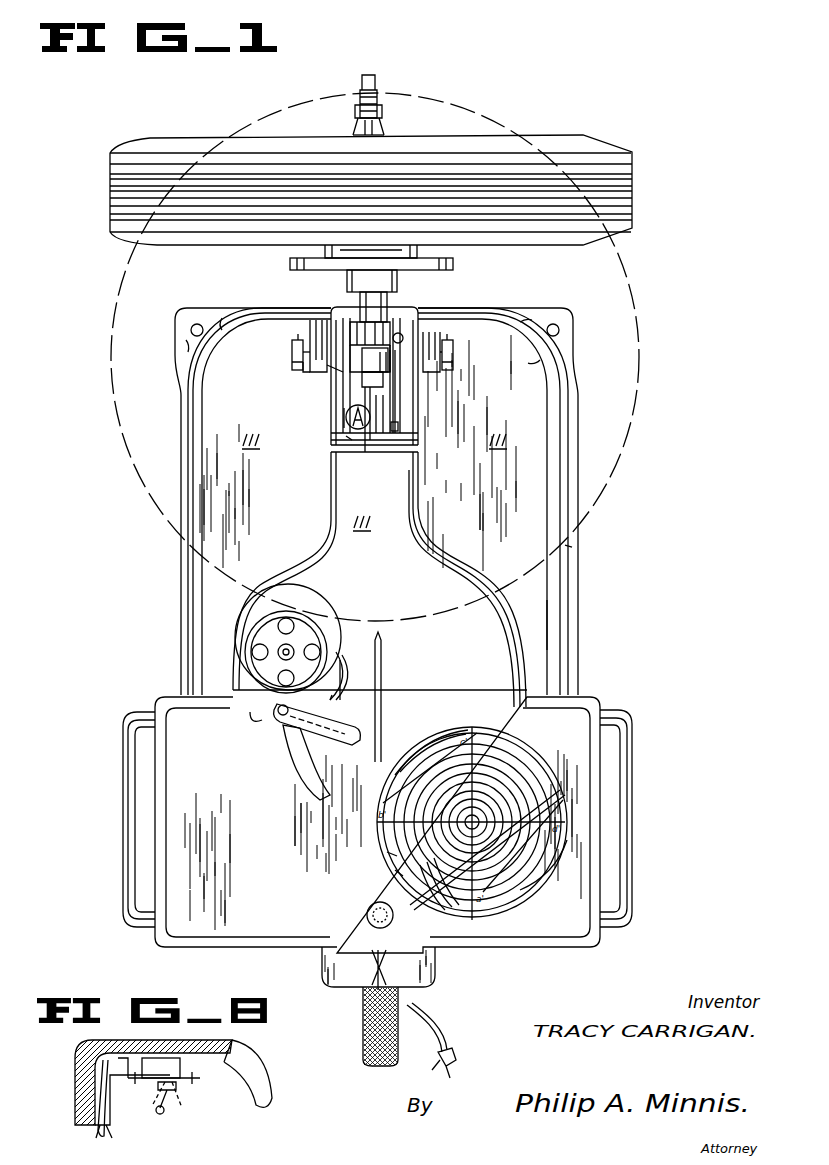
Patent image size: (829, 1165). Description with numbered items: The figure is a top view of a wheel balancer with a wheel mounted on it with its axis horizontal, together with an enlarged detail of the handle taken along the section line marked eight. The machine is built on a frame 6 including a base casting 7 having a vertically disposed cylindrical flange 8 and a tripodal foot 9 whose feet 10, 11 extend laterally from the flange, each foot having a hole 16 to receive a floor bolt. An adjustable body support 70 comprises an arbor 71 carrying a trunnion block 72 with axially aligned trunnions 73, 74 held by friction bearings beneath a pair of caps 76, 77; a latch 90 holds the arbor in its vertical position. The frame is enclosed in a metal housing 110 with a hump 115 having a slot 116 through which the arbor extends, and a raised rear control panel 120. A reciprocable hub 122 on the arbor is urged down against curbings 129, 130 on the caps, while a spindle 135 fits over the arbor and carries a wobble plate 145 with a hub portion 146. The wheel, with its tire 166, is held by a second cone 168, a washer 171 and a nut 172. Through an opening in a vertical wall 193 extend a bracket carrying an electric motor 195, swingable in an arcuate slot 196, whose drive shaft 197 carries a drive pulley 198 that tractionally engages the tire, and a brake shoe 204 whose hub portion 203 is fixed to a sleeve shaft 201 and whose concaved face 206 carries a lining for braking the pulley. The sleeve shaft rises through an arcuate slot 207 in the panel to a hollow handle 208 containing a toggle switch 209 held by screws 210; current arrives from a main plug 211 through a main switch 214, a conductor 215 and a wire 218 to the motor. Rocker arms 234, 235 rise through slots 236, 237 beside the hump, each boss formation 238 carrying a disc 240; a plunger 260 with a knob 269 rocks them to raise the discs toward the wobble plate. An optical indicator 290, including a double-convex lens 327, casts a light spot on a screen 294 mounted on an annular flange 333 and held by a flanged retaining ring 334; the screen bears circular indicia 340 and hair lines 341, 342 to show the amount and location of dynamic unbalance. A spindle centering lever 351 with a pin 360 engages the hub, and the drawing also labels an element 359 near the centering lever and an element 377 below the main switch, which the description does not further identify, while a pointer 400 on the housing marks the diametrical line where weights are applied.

In FIG. 1, the frame 6 is at (563, 627).
In FIG. 1, the base casting 7 is at (528, 318).
In FIG. 1, the cylindrical flange 8 is at (368, 746).
In FIG. 1, the tripodal foot 9 is at (225, 322).
In FIG. 1, the foot 10 is at (562, 350).
In FIG. 1, the foot 11 is at (186, 342).
In FIG. 1, the hole 16 is at (200, 326).
In FIG. 1, the adjustable body support 70 is at (390, 361).
In FIG. 1, the arbor 71 is at (324, 337).
In FIG. 1, the trunnion block 72 is at (382, 366).
In FIG. 1, the trunnion 73 is at (384, 419).
In FIG. 1, the trunnion 74 is at (338, 371).
In FIG. 1, the cap 76 is at (403, 337).
In FIG. 1, the cap 77 is at (350, 379).
In FIG. 1, the latch 90 is at (366, 451).
In FIG. 1, the metal housing 110 is at (580, 553).
In FIG. 1, the hump 115 is at (343, 419).
In FIG. 1, the slot 116 is at (346, 414).
In FIG. 1, the control panel 120 is at (272, 882).
In FIG. 1, the reciprocable hub 122 is at (388, 307).
In FIG. 1, the curbing 129 is at (392, 325).
In FIG. 1, the curbing 130 is at (334, 317).
In FIG. 1, the spindle 135 is at (378, 86).
In FIG. 1, the wobble plate 145 is at (454, 264).
In FIG. 1, the hub portion 146 is at (418, 251).
In FIG. 1, the tire 166 is at (634, 191).
In FIG. 1, the second cone 168 is at (383, 128).
In FIG. 1, the washer 171 is at (356, 126).
In FIG. 1, the nut 172 is at (383, 112).
In FIG. 1, the vertical wall 193 is at (421, 695).
In FIG. 1, the electric motor 195 is at (244, 621).
In FIG. 1, the arcuate slot 196 is at (322, 603).
In FIG. 1, the drive shaft 197 is at (280, 649).
In FIG. 1, the drive pulley 198 is at (268, 663).
In FIG. 8, the sleeve shaft 201 is at (78, 1115).
In FIG. 1, the hub portion 203 is at (341, 659).
In FIG. 1, the brake shoe 204 is at (330, 689).
In FIG. 1, the concaved face 206 is at (341, 671).
In FIG. 1, the arcuate slot 207 is at (300, 779).
In FIG. 1, the handle 208 is at (296, 754).
In FIG. 8, the handle 208 is at (238, 1057).
In FIG. 8, the toggle switch 209 is at (159, 1071).
In FIG. 8, the screw 210 is at (186, 1114).
In FIG. 1, the main plug 211 is at (452, 1051).
In FIG. 1, the main switch 214 is at (370, 961).
In FIG. 8, the conductor 215 is at (100, 1134).
In FIG. 8, the wire 218 is at (128, 1090).
In FIG. 1, the rocker arm 234 is at (445, 364).
In FIG. 1, the rocker arm 235 is at (312, 369).
In FIG. 1, the slot 236 is at (438, 337).
In FIG. 1, the slot 237 is at (303, 342).
In FIG. 1, the boss formation 238 is at (296, 361).
In FIG. 1, the disc 240 is at (296, 347).
In FIG. 1, the plunger 260 is at (372, 903).
In FIG. 1, the knob 269 is at (367, 912).
In FIG. 1, the optical indicator 290 is at (545, 727).
In FIG. 1, the screen 294 is at (537, 884).
In FIG. 1, the double-convex lens 327 is at (346, 437).
In FIG. 1, the annular flange 333 is at (398, 871).
In FIG. 1, the flanged retaining ring 334 is at (390, 851).
In FIG. 1, the circular indicia 340 is at (418, 901).
In FIG. 1, the hair line 341 is at (498, 717).
In FIG. 1, the hair line 342 is at (558, 796).
In FIG. 1, the spindle centering lever 351 is at (396, 391).
In FIG. 1, the valve plate 359 is at (393, 359).
In FIG. 1, the pin 360 is at (399, 428).
In FIG. 1, the stand post 377 is at (362, 1045).
In FIG. 1, the pointer 400 is at (382, 660).